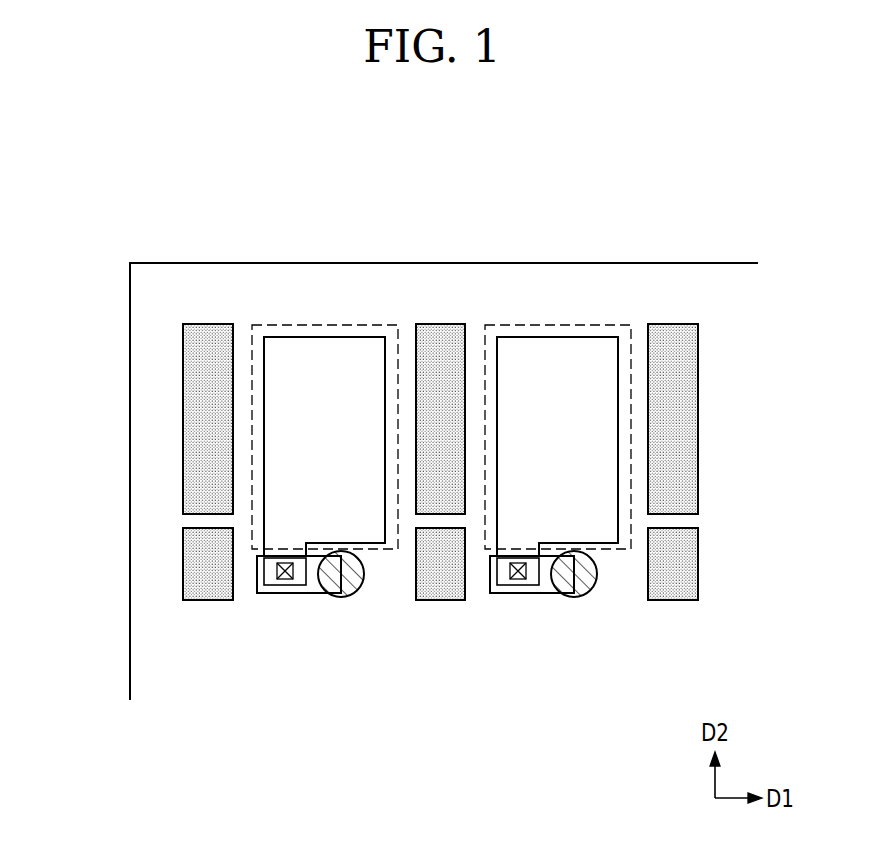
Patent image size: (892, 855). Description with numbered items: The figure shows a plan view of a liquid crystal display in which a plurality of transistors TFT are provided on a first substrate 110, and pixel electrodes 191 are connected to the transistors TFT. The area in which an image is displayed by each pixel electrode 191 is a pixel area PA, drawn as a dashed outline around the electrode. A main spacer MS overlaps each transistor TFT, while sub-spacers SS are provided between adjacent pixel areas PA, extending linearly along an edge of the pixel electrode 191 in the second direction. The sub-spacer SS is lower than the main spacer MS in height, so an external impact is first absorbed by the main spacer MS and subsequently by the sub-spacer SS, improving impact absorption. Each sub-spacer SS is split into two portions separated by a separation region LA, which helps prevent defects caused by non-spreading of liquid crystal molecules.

The first substrate 110 is at (700, 263).
The pixel electrode 191 is at (302, 337).
The pixel area PA is at (373, 325).
The sub-spacer SS is at (212, 324).
The separation region LA is at (170, 518).
The transistor TFT is at (313, 593).
The main spacer MS is at (358, 590).